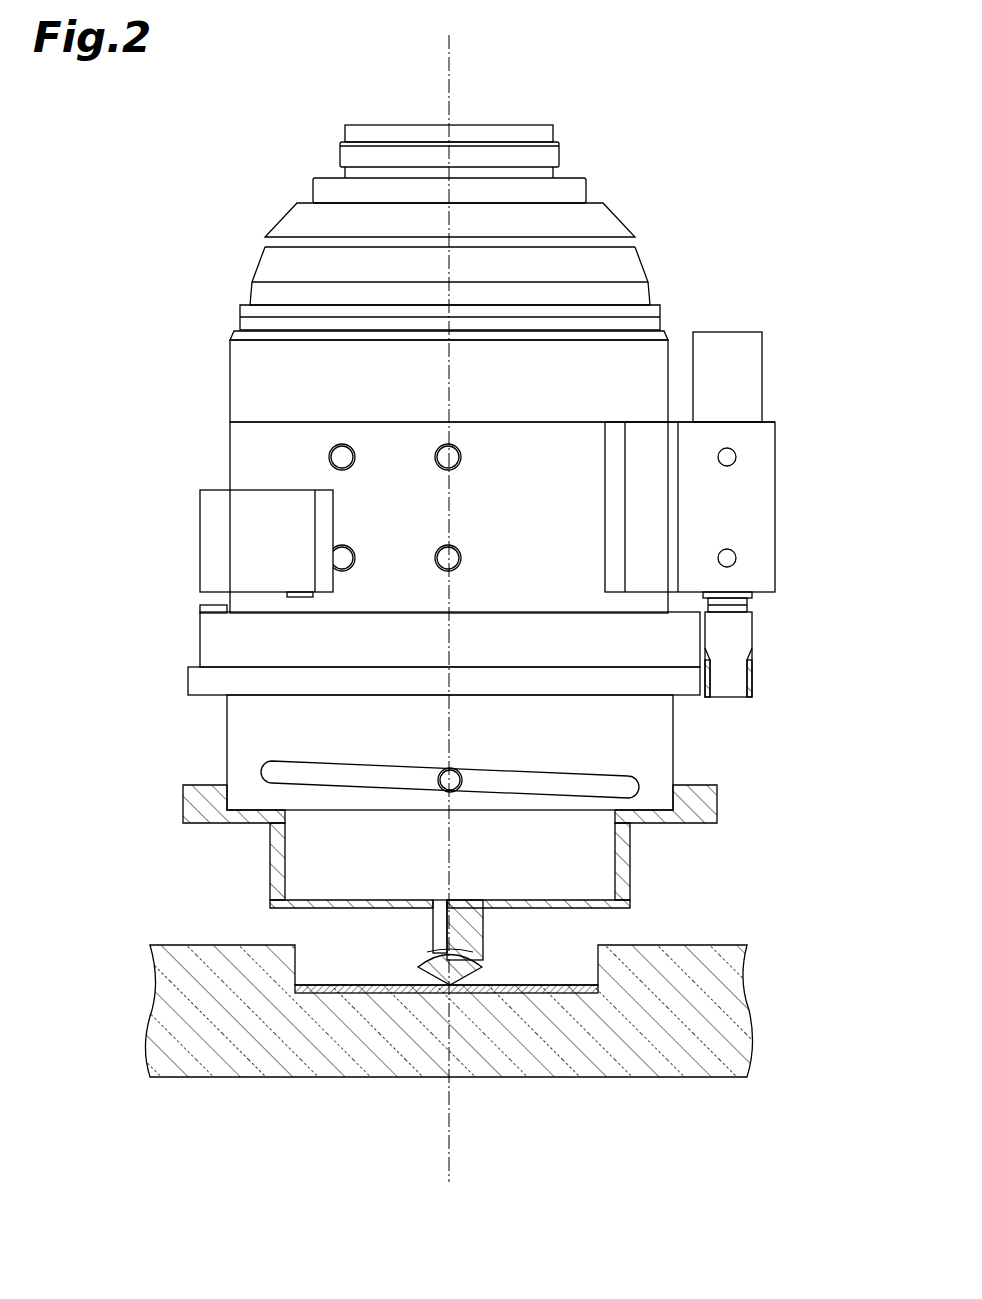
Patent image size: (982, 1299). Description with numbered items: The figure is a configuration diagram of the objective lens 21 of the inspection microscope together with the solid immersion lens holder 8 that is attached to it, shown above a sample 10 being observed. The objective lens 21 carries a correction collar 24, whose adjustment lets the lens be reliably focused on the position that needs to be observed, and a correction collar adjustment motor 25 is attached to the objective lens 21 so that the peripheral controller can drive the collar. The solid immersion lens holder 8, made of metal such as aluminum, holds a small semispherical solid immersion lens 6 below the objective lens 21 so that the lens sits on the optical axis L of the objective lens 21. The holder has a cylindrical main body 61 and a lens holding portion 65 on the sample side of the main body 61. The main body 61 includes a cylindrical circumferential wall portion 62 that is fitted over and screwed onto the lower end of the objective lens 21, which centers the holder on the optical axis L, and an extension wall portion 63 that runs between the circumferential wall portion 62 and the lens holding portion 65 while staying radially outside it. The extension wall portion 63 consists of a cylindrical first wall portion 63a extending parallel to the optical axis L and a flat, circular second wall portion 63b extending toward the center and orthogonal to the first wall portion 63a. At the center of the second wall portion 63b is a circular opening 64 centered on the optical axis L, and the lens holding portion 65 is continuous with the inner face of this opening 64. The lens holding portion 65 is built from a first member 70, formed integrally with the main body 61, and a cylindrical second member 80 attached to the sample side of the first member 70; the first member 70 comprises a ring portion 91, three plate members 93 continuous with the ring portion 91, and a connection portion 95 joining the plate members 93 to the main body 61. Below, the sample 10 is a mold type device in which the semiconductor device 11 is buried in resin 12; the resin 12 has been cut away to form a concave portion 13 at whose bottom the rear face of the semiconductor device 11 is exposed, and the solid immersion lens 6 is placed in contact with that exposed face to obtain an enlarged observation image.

The objective lens 21 is at (228, 392).
The correction collar 24 is at (188, 682).
The correction collar adjustment motor 25 is at (763, 378).
The solid immersion lens holder 8 is at (725, 797).
The main body 61 is at (376, 845).
The circumferential wall portion 62 is at (183, 807).
The extension wall portion 63 is at (360, 871).
The first wall portion 63a is at (277, 858).
The second wall portion 63b is at (312, 912).
The opening 64 is at (367, 900).
The connection portion 95 is at (420, 902).
The first member 70 is at (490, 917).
The plate member 93 is at (437, 932).
The ring portion 91 is at (416, 966).
The second member 80 is at (495, 965).
The lens holding portion 65 is at (424, 951).
The solid immersion lens 6 is at (424, 981).
The sample 10 is at (448, 1038).
The semiconductor device 11 is at (350, 995).
The resin 12 is at (230, 1048).
The concave portion 13 is at (588, 950).
The optical axis L is at (448, 1148).